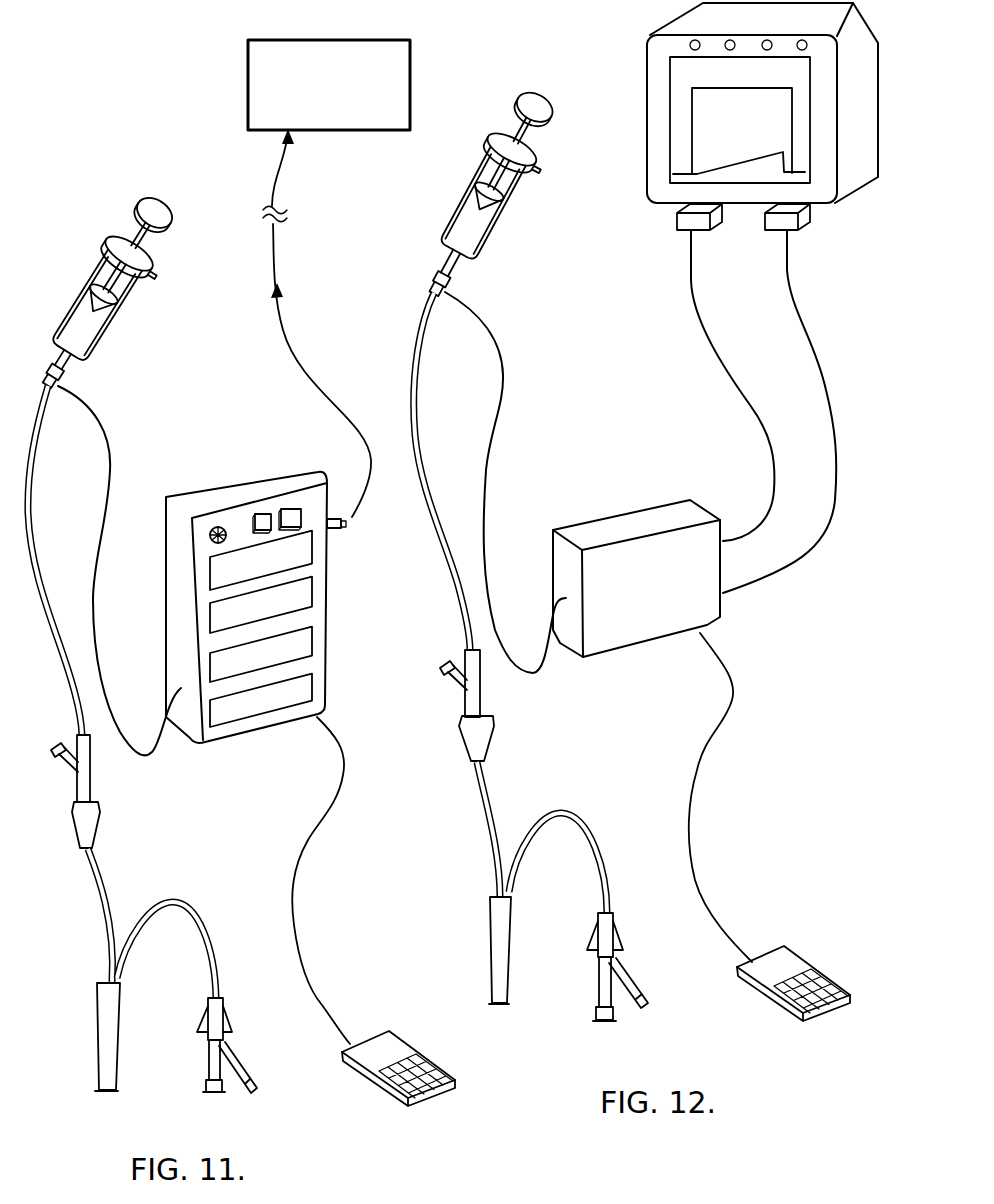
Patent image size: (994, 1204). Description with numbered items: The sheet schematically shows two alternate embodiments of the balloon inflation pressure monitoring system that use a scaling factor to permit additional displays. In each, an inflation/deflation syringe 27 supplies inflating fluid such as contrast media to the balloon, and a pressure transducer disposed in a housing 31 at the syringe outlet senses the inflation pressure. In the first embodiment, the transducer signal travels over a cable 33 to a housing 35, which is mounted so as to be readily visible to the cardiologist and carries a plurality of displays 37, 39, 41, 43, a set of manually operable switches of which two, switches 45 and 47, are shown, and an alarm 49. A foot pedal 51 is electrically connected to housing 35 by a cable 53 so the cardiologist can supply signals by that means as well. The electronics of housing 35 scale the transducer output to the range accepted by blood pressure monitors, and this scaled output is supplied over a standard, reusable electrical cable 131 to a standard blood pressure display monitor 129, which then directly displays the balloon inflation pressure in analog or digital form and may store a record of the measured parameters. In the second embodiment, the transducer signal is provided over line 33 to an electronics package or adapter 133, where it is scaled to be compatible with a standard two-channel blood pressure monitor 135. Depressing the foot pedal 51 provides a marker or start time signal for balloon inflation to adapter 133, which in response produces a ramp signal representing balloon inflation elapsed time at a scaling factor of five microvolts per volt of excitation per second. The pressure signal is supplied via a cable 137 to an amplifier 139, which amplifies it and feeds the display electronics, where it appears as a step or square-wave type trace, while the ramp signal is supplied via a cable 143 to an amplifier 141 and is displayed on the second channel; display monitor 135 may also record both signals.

In FIG. 11, the inflation/deflation syringe 27 is at (112, 315).
In FIG. 12, the inflation/deflation syringe 27 is at (498, 218).
In FIG. 11, the housing 31 is at (62, 384).
In FIG. 12, the housing 31 is at (432, 290).
In FIG. 11, the cable 33 is at (113, 478).
In FIG. 12, the cable 33 is at (500, 380).
In FIG. 11, the housing 35 is at (208, 742).
In FIG. 11, the display 37 is at (262, 556).
In FIG. 11, the display 39 is at (312, 592).
In FIG. 11, the display 41 is at (312, 632).
In FIG. 11, the display 43 is at (312, 688).
In FIG. 11, the manually operable switch 45 is at (260, 510).
In FIG. 11, the manually operable switch 47 is at (297, 507).
In FIG. 11, the alarm 49 is at (218, 525).
In FIG. 11, the foot pedal 51 is at (398, 1060).
In FIG. 12, the foot pedal 51 is at (795, 975).
In FIG. 11, the cable 53 is at (312, 843).
In FIG. 12, the cable 53 is at (715, 745).
In FIG. 11, the blood pressure display monitor 129 is at (265, 131).
In FIG. 11, the electrical cable 131 is at (334, 370).
In FIG. 12, the electronics package or adapter 133 is at (641, 500).
In FIG. 12, the two-channel blood pressure monitor 135 is at (648, 40).
In FIG. 12, the cable 137 is at (746, 405).
In FIG. 12, the amplifier 139 is at (677, 225).
In FIG. 12, the amplifier 141 is at (772, 232).
In FIG. 12, the cable 143 is at (826, 405).